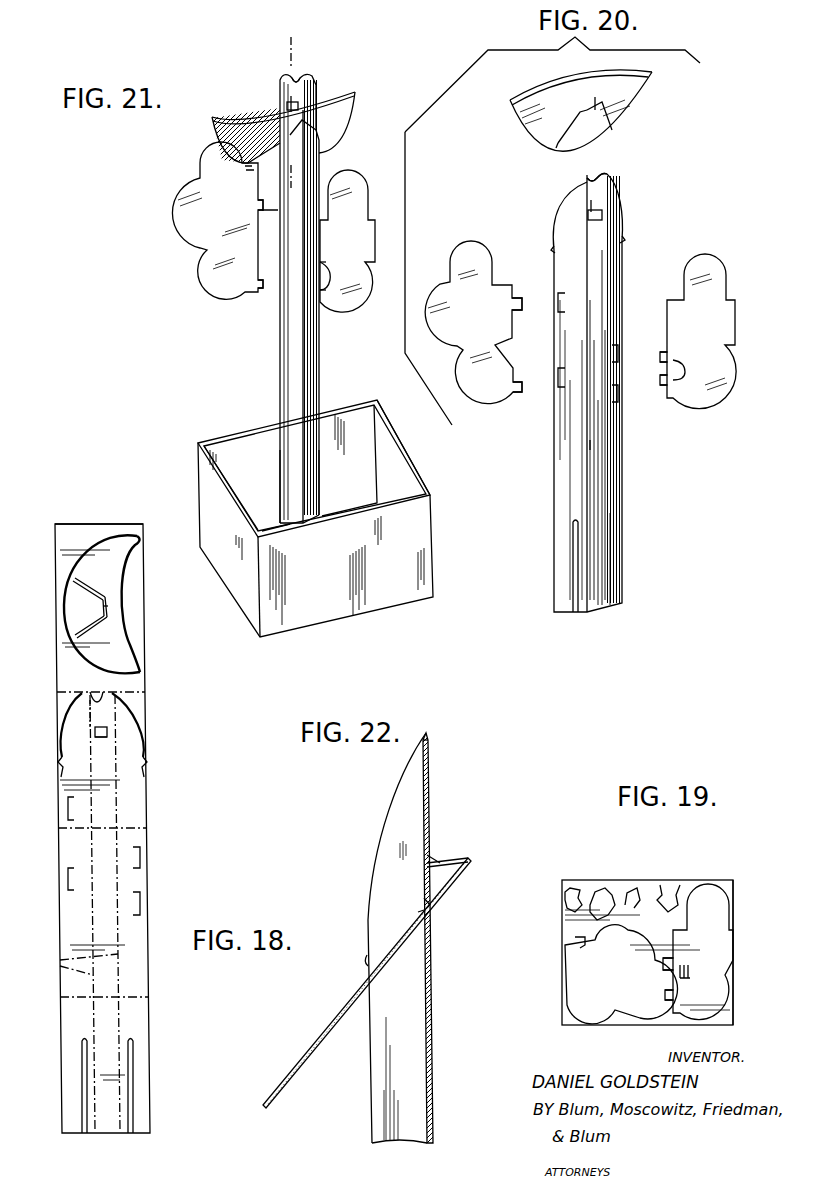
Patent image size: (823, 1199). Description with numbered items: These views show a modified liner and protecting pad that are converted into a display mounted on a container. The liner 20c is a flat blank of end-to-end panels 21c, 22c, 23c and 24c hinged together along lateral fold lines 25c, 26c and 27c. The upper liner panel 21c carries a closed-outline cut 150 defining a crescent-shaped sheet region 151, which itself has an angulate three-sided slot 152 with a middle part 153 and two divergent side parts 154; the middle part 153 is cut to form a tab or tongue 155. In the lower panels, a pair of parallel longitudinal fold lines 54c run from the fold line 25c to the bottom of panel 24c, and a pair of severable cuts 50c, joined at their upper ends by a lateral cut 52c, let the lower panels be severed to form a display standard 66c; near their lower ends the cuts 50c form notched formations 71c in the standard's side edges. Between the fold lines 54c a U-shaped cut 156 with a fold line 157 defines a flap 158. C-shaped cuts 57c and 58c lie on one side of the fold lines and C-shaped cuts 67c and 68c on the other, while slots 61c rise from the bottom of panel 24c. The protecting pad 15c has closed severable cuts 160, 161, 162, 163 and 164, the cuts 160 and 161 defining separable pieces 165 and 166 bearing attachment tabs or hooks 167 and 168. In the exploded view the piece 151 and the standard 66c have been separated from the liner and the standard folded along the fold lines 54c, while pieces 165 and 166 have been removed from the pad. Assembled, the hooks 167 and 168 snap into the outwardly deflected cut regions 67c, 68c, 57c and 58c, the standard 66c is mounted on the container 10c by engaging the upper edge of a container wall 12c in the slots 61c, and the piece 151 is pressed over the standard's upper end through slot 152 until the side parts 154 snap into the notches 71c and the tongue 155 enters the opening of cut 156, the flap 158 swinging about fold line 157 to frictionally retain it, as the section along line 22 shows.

In FIG. 21, the container 10c is at (378, 613).
In FIG. 21, the container wall 12c is at (355, 420).
In FIG. 19, the protecting pad 15c is at (735, 903).
In FIG. 18, the liner 20c is at (151, 892).
In FIG. 18, the upper liner panel 21c is at (84, 529).
In FIG. 21, the section line 22— 22 is at (288, 48).
In FIG. 18, the liner panel 22c is at (137, 806).
In FIG. 18, the liner panel 23c is at (143, 981).
In FIG. 18, the liner panel 24c is at (147, 1083).
In FIG. 18, the fold line 25c is at (140, 691).
In FIG. 18, the fold line 26c is at (140, 829).
In FIG. 18, the fold line 27c is at (148, 999).
In FIG. 18, the severable cuts 50c is at (74, 704).
In FIG. 18, the cut 52c is at (97, 697).
In FIG. 21, the cut 52c is at (296, 79).
In FIG. 20, the cut 52c is at (603, 173).
In FIG. 22, the cut 52c is at (428, 778).
In FIG. 18, the longitudinal fold lines 54c is at (70, 964).
In FIG. 20, the longitudinal fold lines 54c is at (605, 445).
In FIG. 18, the C-shaped cut 57c is at (68, 811).
In FIG. 21, the C-shaped cut 57c is at (262, 212).
In FIG. 20, the C-shaped cut 57c is at (557, 305).
In FIG. 18, the C-shaped cut 58c is at (68, 880).
In FIG. 21, the C-shaped cut 58c is at (256, 290).
In FIG. 20, the C-shaped cut 58c is at (558, 380).
In FIG. 18, the slots 61c is at (127, 1123).
In FIG. 21, the slots 61c is at (278, 460).
In FIG. 20, the slots 61c is at (612, 592).
In FIG. 18, the display standard 66c is at (107, 918).
In FIG. 21, the display standard 66c is at (268, 338).
In FIG. 20, the display standard 66c is at (566, 440).
In FIG. 22, the display standard 66c is at (432, 1037).
In FIG. 18, the C-shaped cut 67c is at (141, 858).
In FIG. 21, the C-shaped cut 67c is at (327, 262).
In FIG. 20, the C-shaped cut 67c is at (618, 350).
In FIG. 18, the C-shaped cut 68c is at (141, 903).
In FIG. 21, the C-shaped cut 68c is at (325, 292).
In FIG. 20, the C-shaped cut 68c is at (618, 390).
In FIG. 18, the notched formations 71c is at (59, 762).
In FIG. 20, the notched formations 71c is at (625, 240).
In FIG. 22, the notched formations 71c is at (366, 960).
In FIG. 18, the cut 150 is at (132, 571).
In FIG. 18, the crescent-shaped sheet region 151 is at (103, 568).
In FIG. 21, the crescent-shaped sheet region 151 is at (352, 95).
In FIG. 20, the crescent-shaped sheet region 151 is at (647, 100).
In FIG. 22, the crescent-shaped sheet region 151 is at (333, 1013).
In FIG. 18, the angulate three-sided slot 152 is at (80, 579).
In FIG. 20, the angulate three-sided slot 152 is at (585, 118).
In FIG. 18, the middle part 153 is at (100, 615).
In FIG. 20, the middle part 153 is at (560, 146).
In FIG. 22, the middle part 153 is at (418, 912).
In FIG. 18, the side parts 154 is at (73, 576).
In FIG. 20, the side parts 154 is at (615, 112).
In FIG. 18, the tab or tongue 155 is at (110, 608).
In FIG. 20, the tab or tongue 155 is at (595, 98).
In FIG. 22, the tab or tongue 155 is at (424, 903).
In FIG. 18, the U-shaped cut 156 is at (96, 739).
In FIG. 18, the fold line 157 is at (92, 729).
In FIG. 21, the fold line 157 is at (290, 106).
In FIG. 20, the fold line 157 is at (590, 210).
In FIG. 22, the fold line 157 is at (430, 860).
In FIG. 18, the flap 158 is at (94, 731).
In FIG. 21, the flap 158 is at (299, 104).
In FIG. 20, the flap 158 is at (602, 214).
In FIG. 22, the flap 158 is at (466, 856).
In FIG. 19, the severable cut 160 is at (733, 997).
In FIG. 19, the severable cut 161 is at (622, 1021).
In FIG. 19, the severable cut 162 is at (683, 882).
In FIG. 19, the severable cut 163 is at (605, 885).
In FIG. 19, the severable cut 164 is at (563, 898).
In FIG. 21, the separable piece 165 is at (360, 186).
In FIG. 20, the separable piece 165 is at (712, 280).
In FIG. 19, the separable piece 165 is at (698, 952).
In FIG. 21, the separable piece 166 is at (172, 212).
In FIG. 20, the separable piece 166 is at (480, 246).
In FIG. 19, the separable piece 166 is at (610, 974).
In FIG. 20, the attachment tabs or hooks 167 is at (664, 355).
In FIG. 19, the attachment tabs or hooks 167 is at (676, 1000).
In FIG. 20, the attachment tabs or hooks 168 is at (520, 298).
In FIG. 19, the attachment tabs or hooks 168 is at (634, 892).